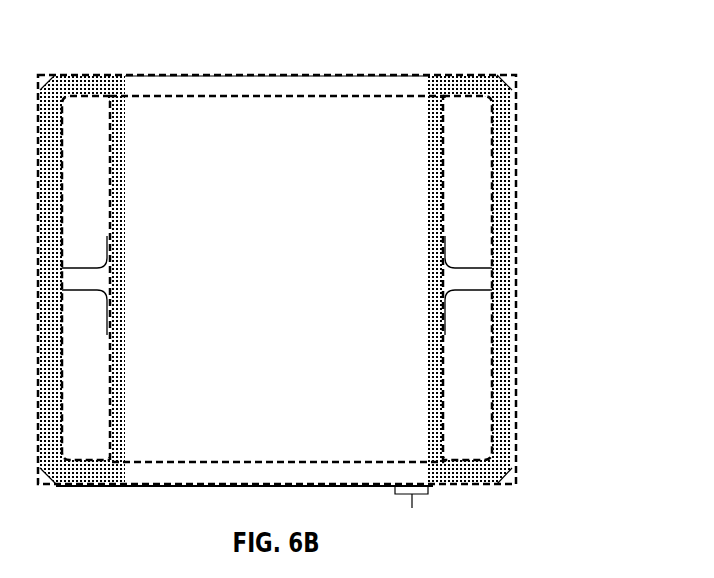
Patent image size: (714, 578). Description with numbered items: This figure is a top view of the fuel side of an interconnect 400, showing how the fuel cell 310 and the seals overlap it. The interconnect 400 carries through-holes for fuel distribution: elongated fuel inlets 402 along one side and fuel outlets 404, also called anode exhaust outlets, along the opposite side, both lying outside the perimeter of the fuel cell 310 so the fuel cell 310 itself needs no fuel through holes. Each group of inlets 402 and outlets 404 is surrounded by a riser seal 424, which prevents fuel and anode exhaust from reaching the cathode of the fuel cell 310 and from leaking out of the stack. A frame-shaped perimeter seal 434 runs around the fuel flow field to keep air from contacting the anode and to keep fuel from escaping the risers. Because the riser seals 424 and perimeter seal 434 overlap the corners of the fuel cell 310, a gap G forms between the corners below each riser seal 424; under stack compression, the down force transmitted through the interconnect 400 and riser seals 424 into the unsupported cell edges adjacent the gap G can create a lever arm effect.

The interconnect 400 is at (515, 260).
The fuel inlets 402 is at (67, 240).
The fuel outlets 404 is at (447, 240).
The fuel cell 310 is at (302, 293).
The riser seals 424 is at (131, 141).
The perimeter seal 434 is at (278, 96).
The gap G is at (411, 510).